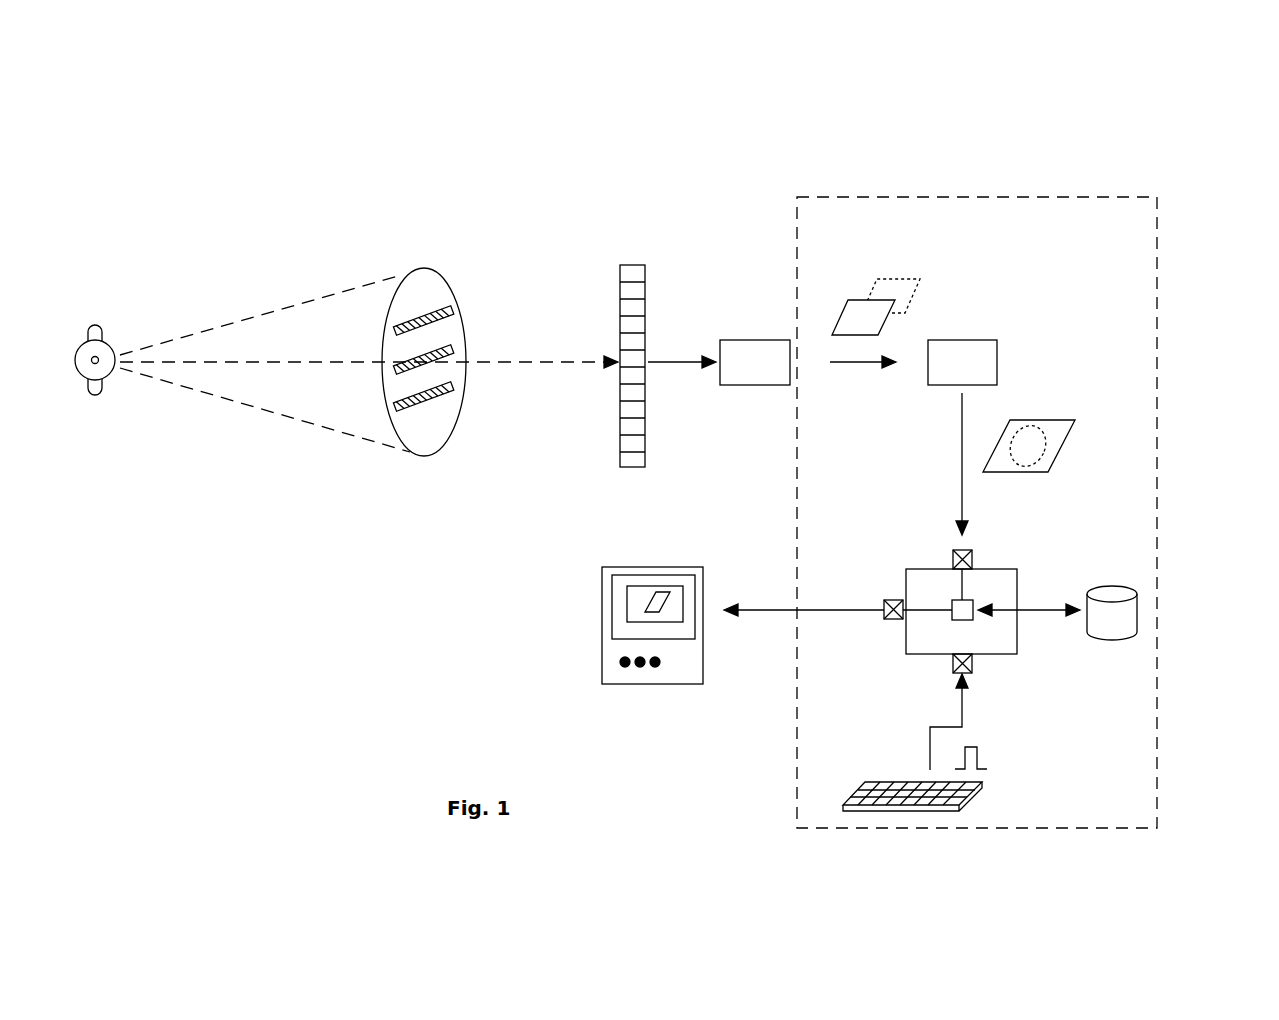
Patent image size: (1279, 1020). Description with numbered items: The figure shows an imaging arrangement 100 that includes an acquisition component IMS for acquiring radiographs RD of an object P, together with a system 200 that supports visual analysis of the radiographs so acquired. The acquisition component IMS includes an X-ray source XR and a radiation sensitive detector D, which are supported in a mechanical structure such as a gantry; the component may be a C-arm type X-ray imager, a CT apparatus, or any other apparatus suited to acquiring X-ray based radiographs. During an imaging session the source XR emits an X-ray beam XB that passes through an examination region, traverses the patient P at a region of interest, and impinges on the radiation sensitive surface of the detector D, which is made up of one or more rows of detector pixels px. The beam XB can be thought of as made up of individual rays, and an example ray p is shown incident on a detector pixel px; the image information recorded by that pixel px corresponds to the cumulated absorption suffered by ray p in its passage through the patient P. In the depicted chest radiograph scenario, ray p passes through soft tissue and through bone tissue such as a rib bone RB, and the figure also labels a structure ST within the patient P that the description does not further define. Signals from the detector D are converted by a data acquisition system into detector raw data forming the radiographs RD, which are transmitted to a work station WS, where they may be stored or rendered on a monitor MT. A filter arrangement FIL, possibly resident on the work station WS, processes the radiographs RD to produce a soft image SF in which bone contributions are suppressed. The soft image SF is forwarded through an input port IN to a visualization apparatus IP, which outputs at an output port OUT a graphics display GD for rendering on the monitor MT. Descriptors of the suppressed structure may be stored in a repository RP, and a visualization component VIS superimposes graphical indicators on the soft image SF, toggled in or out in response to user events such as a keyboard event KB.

The acquisition component IMS is at (390, 183).
The arrangement 100 is at (650, 165).
The system 200 is at (848, 197).
The X-ray source XR is at (95, 396).
The X-ray beam XB is at (272, 320).
The ray p is at (369, 372).
The object P is at (432, 282).
The structure ST is at (455, 318).
The rib bone RB is at (437, 402).
The detector D is at (660, 280).
The detector pixel px is at (630, 355).
The radiograph RD is at (893, 280).
The filter arrangement FIL is at (988, 352).
The soft image SF is at (1066, 440).
The visualization apparatus IP is at (931, 515).
The input port IN is at (978, 560).
The output port OUT is at (897, 600).
The visualization component VIS is at (963, 620).
The repository RP is at (1112, 594).
The keyboard event KB is at (980, 795).
The work station WS is at (1128, 705).
The monitor MT is at (612, 672).
The graphics display GD is at (651, 580).